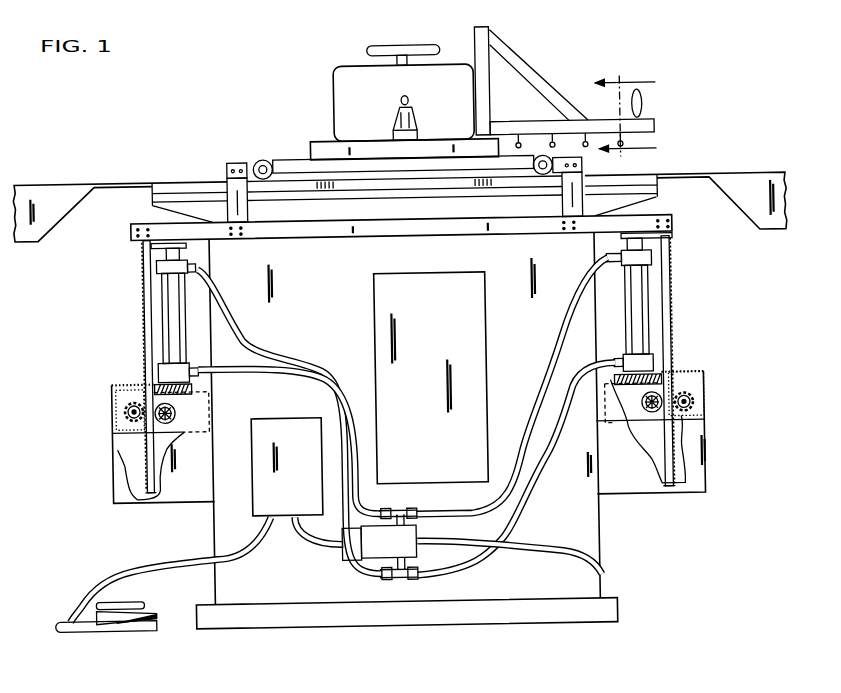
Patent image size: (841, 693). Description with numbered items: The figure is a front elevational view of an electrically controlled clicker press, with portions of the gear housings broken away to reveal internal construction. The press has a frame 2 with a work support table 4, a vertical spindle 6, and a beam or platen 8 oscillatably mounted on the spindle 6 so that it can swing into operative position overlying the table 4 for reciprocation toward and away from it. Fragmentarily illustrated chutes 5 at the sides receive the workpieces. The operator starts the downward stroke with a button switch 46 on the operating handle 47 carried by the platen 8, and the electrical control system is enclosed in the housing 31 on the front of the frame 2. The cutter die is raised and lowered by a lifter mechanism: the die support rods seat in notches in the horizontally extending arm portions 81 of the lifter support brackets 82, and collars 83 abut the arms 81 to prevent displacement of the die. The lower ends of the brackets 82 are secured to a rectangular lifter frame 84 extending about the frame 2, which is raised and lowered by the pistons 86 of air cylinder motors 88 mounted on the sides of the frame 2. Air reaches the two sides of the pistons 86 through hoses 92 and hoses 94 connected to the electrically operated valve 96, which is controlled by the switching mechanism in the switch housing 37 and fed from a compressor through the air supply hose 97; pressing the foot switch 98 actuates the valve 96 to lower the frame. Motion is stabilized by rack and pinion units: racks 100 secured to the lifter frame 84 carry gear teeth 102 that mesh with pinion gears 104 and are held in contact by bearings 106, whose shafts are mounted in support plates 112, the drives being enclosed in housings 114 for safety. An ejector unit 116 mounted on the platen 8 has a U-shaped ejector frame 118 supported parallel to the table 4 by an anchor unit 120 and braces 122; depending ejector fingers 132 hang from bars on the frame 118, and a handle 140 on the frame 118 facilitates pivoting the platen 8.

The frame 2 is at (597, 534).
The work support table 4 is at (664, 184).
The chute 5 is at (70, 177).
The vertical spindle 6 is at (626, 114).
The platen 8 is at (338, 95).
The housing 31 is at (375, 342).
The switch housing 37 is at (249, 454).
The button switch 46 is at (410, 96).
The operating handle 47 is at (418, 108).
The arm portion 81 is at (250, 159).
The lifter support bracket 82 is at (253, 204).
The collar 83 is at (267, 157).
The lifter frame 84 is at (338, 236).
The piston 86 is at (168, 249).
The air cylinder motor 88 is at (163, 326).
The hose 92 is at (279, 363).
The hose 94 is at (243, 340).
The electrically operated valve 96 is at (339, 556).
The air supply hose 97 is at (523, 553).
The foot switch 98 is at (125, 596).
The rack 100 is at (145, 285).
The gear teeth 102 is at (146, 315).
The pinion gear 104 is at (124, 408).
The bearing 106 is at (175, 410).
The support plate 112 is at (121, 442).
The housing 114 is at (112, 478).
The ejector unit 116 is at (578, 68).
The ejector frame 118 is at (661, 130).
The anchor unit 120 is at (480, 43).
The brace 122 is at (524, 53).
The ejector finger 132 is at (629, 147).
The handle 140 is at (647, 109).